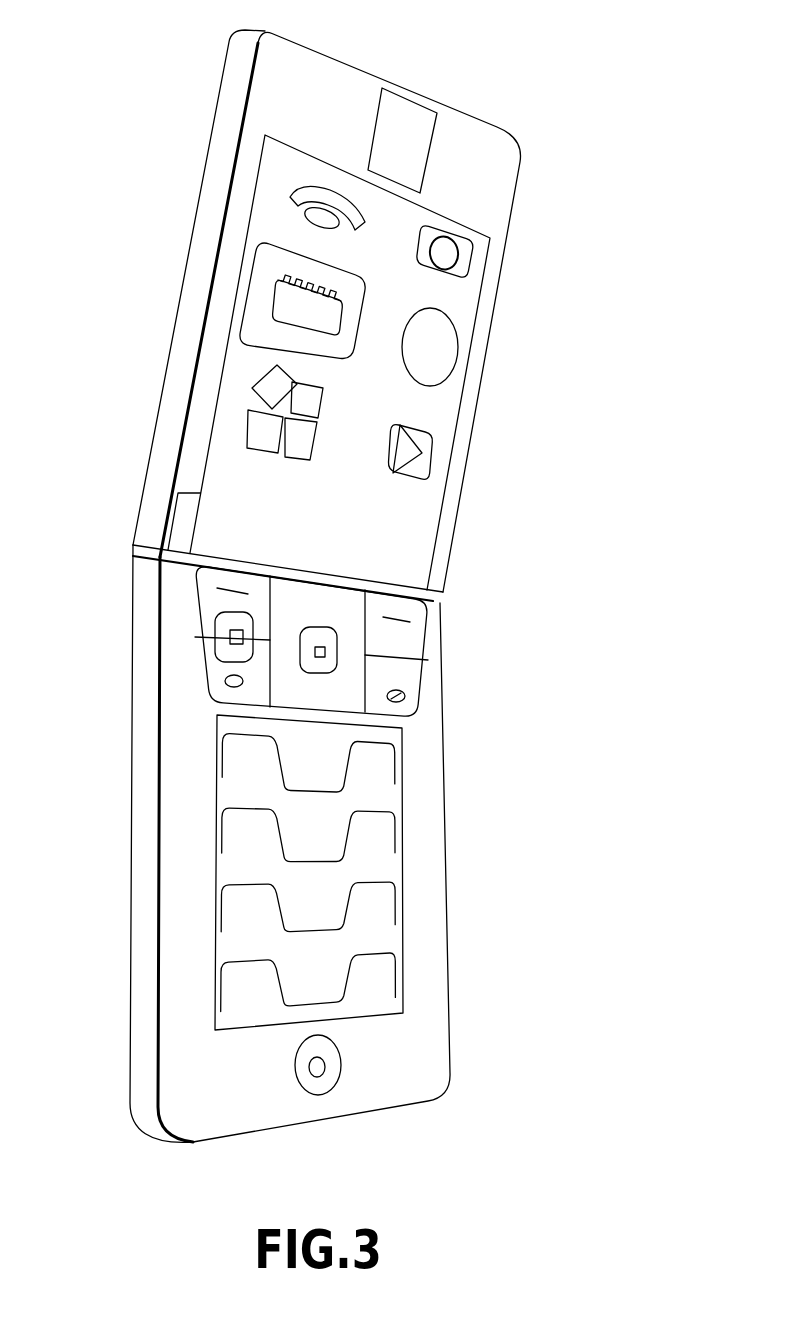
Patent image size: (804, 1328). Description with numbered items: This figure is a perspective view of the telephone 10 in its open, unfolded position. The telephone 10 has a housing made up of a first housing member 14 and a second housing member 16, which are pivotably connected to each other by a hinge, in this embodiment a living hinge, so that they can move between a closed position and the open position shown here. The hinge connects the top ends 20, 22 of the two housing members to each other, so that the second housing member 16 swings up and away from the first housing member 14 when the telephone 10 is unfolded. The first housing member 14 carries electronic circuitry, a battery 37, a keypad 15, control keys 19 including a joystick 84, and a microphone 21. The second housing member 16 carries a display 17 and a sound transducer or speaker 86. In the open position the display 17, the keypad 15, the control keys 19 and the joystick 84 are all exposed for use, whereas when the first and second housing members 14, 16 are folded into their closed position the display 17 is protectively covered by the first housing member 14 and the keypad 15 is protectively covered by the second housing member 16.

The telephone 10 is at (604, 319).
The first housing member 14 is at (447, 807).
The keypad 15 is at (233, 945).
The second housing member 16 is at (232, 247).
The display 17 is at (445, 425).
The control keys 19 is at (233, 590).
The top end of first housing member 20 is at (150, 558).
The microphone 21 is at (320, 1083).
The top end of second housing member 22 is at (145, 543).
The battery 37 is at (428, 915).
The joystick 84 is at (330, 672).
The sound transducer or speaker 86 is at (402, 128).